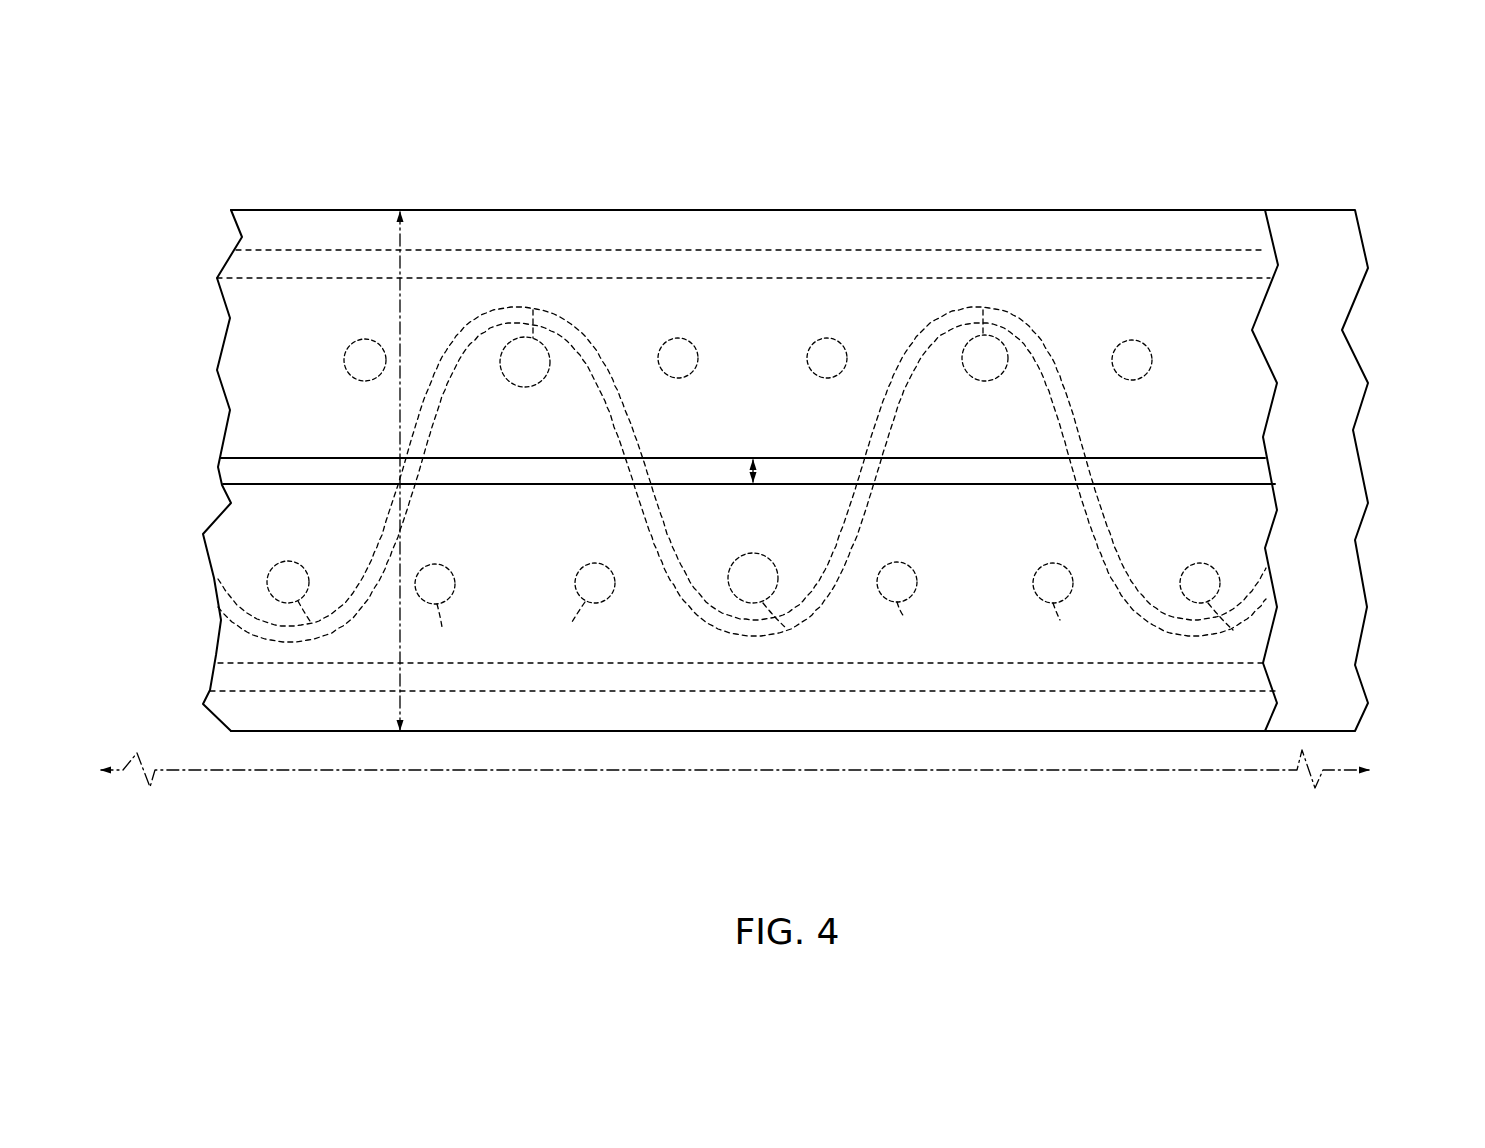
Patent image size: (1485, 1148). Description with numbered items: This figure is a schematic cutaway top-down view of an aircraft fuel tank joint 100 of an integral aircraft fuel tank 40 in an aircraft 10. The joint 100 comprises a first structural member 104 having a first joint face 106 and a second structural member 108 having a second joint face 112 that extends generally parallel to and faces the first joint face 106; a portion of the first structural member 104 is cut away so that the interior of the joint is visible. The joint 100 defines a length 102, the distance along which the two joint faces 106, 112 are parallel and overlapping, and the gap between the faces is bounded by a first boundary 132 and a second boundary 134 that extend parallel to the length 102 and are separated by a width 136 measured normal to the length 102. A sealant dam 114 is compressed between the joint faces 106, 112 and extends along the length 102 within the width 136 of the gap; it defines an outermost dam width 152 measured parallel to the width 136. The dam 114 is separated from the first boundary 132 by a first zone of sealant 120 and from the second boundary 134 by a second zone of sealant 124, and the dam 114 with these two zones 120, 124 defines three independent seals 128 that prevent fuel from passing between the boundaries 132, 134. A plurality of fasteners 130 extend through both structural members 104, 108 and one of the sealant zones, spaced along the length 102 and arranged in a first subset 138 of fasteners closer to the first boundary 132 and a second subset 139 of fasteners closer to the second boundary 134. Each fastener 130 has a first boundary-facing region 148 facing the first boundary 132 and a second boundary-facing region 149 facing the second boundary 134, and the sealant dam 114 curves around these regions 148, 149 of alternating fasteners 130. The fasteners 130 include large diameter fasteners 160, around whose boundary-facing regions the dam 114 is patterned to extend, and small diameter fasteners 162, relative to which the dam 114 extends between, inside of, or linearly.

The assembly 10 is at (1408, 98).
The integral aircraft fuel tank 40 is at (1400, 128).
The aircraft fuel tank joint 100 is at (1390, 160).
The length 102 is at (588, 772).
The first structural member 104 is at (1330, 233).
The first joint face 106 is at (1262, 368).
The second structural member 108 is at (205, 650).
The second joint face 112 is at (245, 438).
The sealant dam 114 is at (410, 247).
The first zone of sealant 120 is at (268, 227).
The second zone of sealant 124 is at (240, 540).
The independent seals 128 is at (248, 470).
The fasteners 130 is at (362, 336).
The first boundary 132 is at (730, 193).
The second boundary 134 is at (907, 747).
The width 136 is at (403, 335).
The first subset of fasteners 138 is at (342, 355).
The second subset of fasteners 139 is at (1228, 573).
The first boundary-facing region 148 is at (542, 310).
The second boundary-facing region 149 is at (327, 630).
The outermost dam width 152 is at (757, 474).
The large diameter fasteners 160 is at (523, 390).
The small diameter fasteners 162 is at (657, 343).